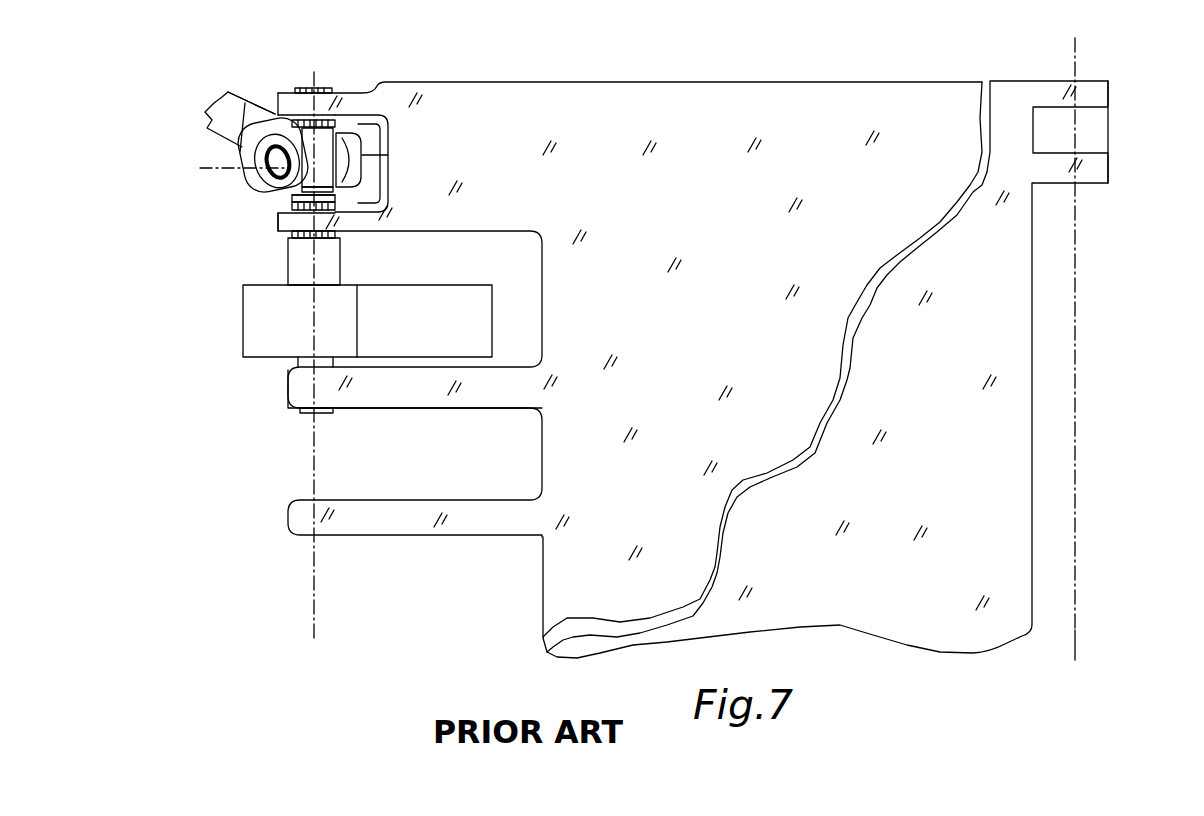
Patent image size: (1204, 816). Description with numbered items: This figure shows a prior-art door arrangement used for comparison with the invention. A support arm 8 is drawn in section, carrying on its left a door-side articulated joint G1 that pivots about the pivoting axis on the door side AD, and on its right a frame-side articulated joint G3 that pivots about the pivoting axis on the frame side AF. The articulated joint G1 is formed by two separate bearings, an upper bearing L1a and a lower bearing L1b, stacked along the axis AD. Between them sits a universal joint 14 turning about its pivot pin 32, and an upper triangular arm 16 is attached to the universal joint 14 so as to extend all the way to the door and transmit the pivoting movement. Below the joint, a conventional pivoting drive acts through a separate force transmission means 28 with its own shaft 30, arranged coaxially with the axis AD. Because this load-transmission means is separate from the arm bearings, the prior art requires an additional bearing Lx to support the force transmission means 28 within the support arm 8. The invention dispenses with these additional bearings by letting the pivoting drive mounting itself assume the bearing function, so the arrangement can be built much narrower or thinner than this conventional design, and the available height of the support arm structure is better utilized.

The support arm 8 is at (673, 102).
The universal joint 14 is at (286, 194).
The upper triangular arm 16 is at (245, 107).
The force transmission means 28 is at (360, 287).
The shaft of force transmission means 30 is at (288, 253).
The pivot pin of universal joint 32 is at (315, 90).
The additional bearing Lx is at (297, 397).
The articulated joint of support arm on the door side G1 is at (90, 237).
The bearing L1a is at (243, 110).
The bearing L1b is at (287, 222).
The articulated joint of support arm on the frame side G3 is at (1118, 184).
The pivoting axis on the door side AD is at (314, 642).
The pivoting axis on the frame side AF is at (1077, 643).